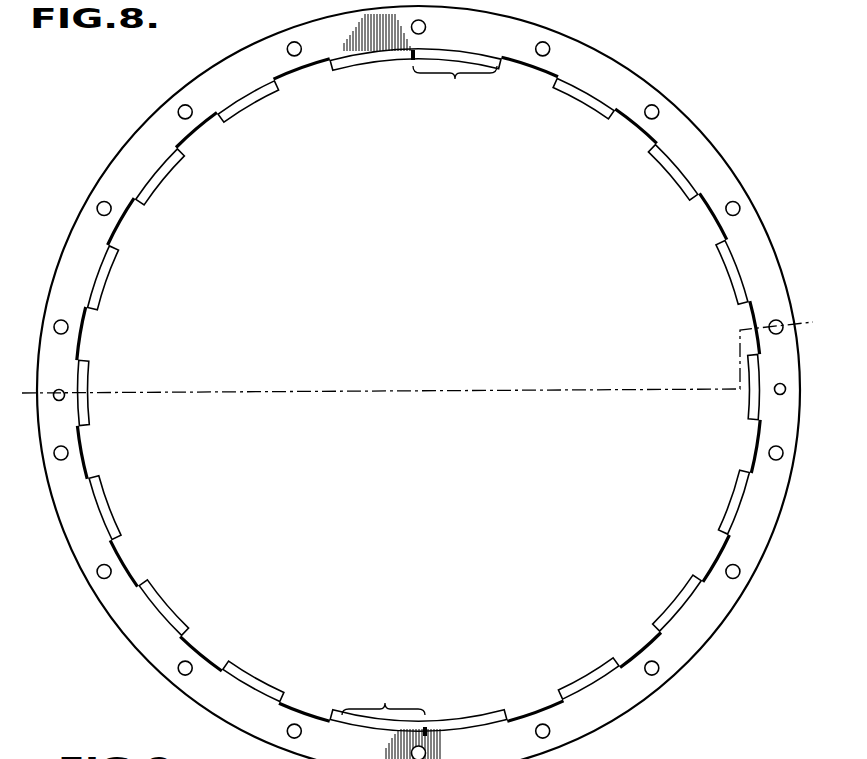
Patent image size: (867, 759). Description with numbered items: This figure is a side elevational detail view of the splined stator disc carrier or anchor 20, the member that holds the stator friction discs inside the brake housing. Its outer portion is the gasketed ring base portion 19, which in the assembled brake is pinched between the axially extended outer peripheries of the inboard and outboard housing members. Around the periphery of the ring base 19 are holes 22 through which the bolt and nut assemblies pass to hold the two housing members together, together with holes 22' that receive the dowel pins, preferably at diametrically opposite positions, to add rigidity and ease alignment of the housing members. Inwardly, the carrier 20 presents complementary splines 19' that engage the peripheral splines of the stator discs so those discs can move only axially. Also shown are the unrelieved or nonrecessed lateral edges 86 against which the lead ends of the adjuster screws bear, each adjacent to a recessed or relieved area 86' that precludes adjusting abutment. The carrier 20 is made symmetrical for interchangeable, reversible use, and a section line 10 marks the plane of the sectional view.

The section line 10- 10 is at (810, 299).
The gasketed ring base portion 19 is at (418, 376).
The complementary splines 19' is at (419, 390).
The splined stator disc carrier 20 is at (699, 125).
The holes 22 is at (418, 379).
The holes 22' is at (420, 419).
The unrelieved lateral edges 86 is at (408, 386).
The recessed area 86' is at (419, 390).